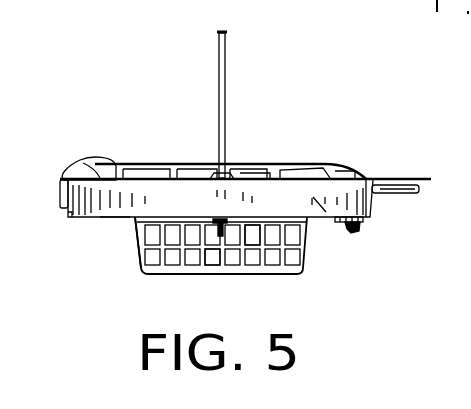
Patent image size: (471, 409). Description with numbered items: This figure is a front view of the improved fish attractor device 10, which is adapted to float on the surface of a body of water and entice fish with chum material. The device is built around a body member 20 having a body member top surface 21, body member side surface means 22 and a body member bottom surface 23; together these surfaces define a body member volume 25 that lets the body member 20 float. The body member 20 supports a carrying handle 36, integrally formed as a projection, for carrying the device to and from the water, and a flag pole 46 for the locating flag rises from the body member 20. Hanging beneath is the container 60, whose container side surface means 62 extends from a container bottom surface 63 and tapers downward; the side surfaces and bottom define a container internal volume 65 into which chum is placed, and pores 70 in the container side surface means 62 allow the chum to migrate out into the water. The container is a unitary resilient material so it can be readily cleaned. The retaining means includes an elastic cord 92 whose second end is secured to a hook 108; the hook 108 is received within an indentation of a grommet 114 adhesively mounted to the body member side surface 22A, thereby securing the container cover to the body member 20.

The fish attractor device 10 is at (286, 60).
The body member 20 is at (152, 197).
The body member top surface 21 is at (364, 178).
The body member side surface means 22 is at (372, 213).
The body member side surface 22A is at (69, 215).
The body member bottom surface 23 is at (113, 219).
The body member volume 25 is at (333, 228).
The carrying handle 36 is at (410, 178).
The flag pole 46 is at (228, 43).
The container 60 is at (273, 253).
The container side surface means 62 is at (137, 253).
The container bottom surface 63 is at (207, 257).
The container internal volume 65 is at (212, 278).
The pores 70 is at (252, 238).
The elastic cord 92 is at (262, 165).
The hook 108 is at (84, 163).
The grommet 114 is at (63, 202).